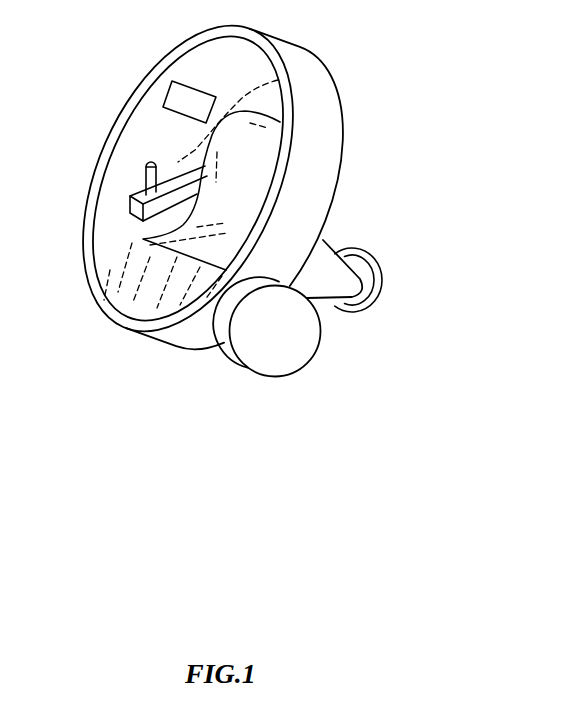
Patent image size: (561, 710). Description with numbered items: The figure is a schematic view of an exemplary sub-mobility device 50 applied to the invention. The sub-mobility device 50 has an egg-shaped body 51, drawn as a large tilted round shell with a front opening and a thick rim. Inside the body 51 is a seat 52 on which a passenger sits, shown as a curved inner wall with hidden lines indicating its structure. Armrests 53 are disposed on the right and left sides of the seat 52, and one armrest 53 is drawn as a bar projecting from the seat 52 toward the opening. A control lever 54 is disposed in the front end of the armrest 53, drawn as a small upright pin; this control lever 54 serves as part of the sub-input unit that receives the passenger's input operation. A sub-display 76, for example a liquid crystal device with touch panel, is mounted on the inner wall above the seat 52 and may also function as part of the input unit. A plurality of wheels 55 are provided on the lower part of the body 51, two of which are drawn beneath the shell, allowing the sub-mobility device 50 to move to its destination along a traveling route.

The sub-mobility device 50 is at (268, 188).
The egg-shaped body 51 is at (316, 86).
The seat 52 is at (258, 183).
The armrest 53 is at (130, 207).
The control lever 54 is at (145, 173).
The wheel 55 is at (380, 273).
The sub-display 76 is at (166, 97).